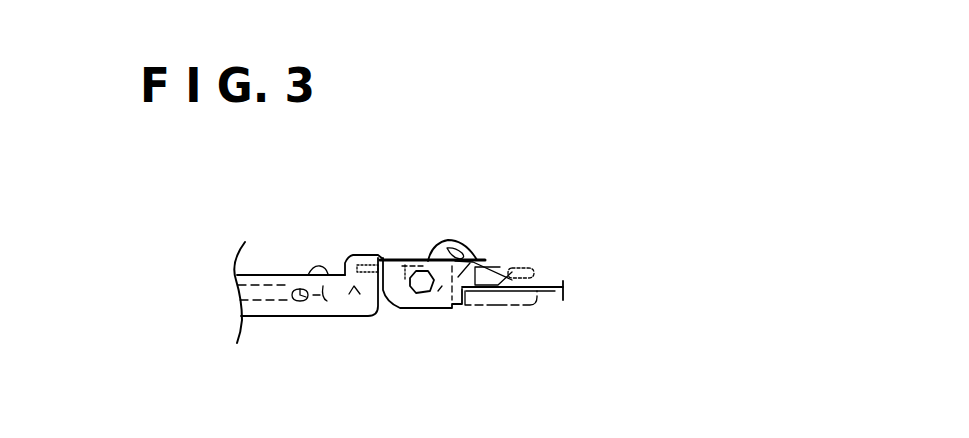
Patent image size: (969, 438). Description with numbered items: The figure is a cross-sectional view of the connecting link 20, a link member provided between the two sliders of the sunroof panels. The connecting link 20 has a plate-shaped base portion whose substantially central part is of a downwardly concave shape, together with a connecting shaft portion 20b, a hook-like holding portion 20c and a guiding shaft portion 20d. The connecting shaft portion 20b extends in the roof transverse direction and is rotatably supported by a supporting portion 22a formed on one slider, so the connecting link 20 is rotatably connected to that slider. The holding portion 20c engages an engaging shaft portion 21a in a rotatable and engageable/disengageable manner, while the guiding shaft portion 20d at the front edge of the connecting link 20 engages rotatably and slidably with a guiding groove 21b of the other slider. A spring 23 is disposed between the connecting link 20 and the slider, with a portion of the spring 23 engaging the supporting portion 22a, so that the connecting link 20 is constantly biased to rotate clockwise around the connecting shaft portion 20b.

The connecting link 20 is at (381, 254).
The connecting shaft portion 20b is at (445, 246).
The holding portion 20c is at (320, 272).
The guiding shaft portion 20d is at (292, 302).
The engaging shaft portion 21a is at (340, 276).
The guiding groove 21b is at (261, 291).
The supporting portion 22a is at (487, 262).
The spring 23 is at (403, 257).